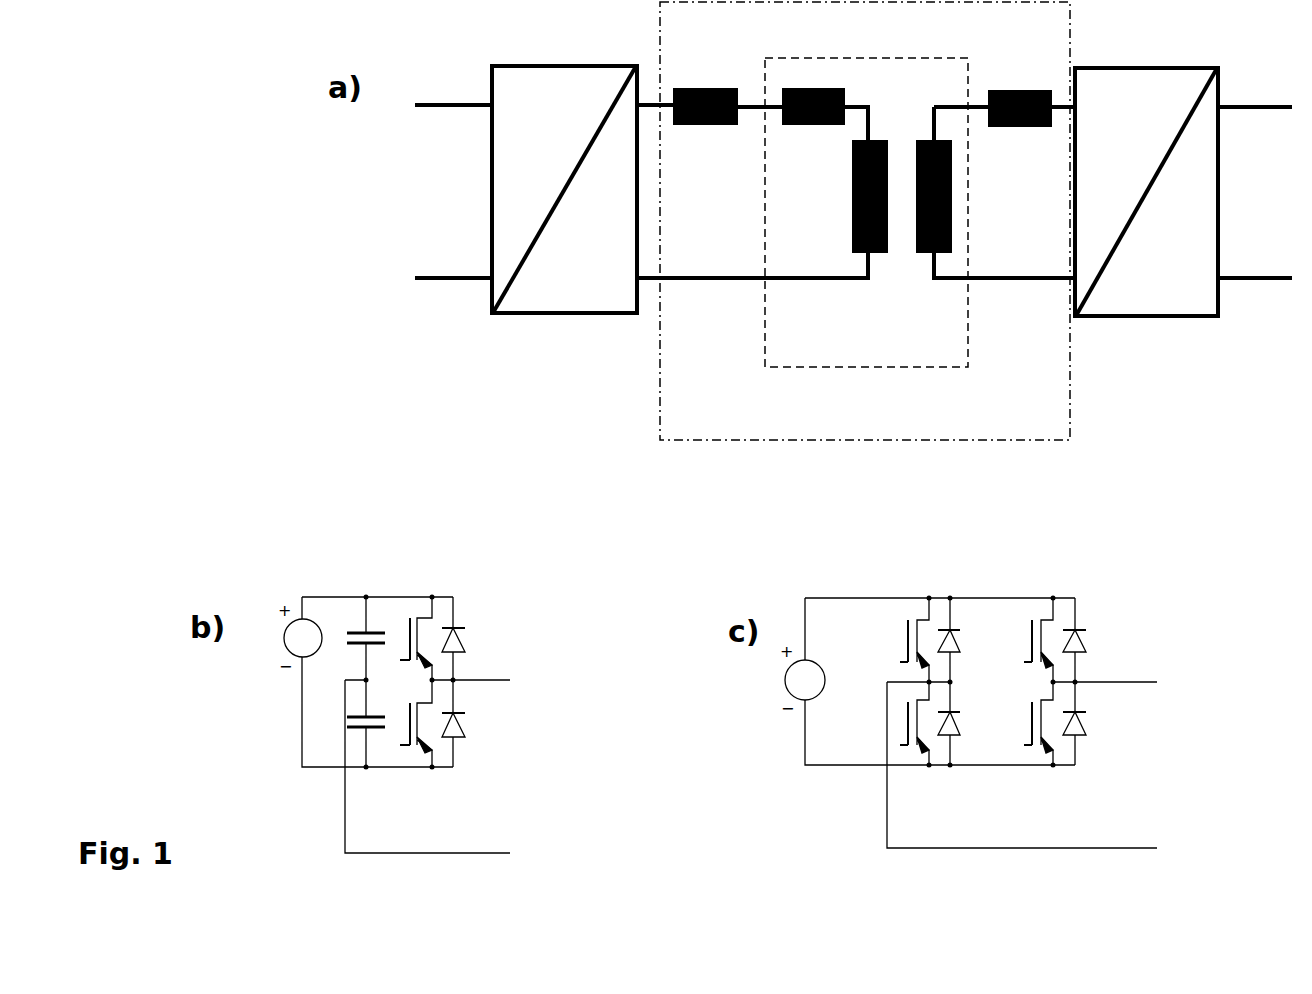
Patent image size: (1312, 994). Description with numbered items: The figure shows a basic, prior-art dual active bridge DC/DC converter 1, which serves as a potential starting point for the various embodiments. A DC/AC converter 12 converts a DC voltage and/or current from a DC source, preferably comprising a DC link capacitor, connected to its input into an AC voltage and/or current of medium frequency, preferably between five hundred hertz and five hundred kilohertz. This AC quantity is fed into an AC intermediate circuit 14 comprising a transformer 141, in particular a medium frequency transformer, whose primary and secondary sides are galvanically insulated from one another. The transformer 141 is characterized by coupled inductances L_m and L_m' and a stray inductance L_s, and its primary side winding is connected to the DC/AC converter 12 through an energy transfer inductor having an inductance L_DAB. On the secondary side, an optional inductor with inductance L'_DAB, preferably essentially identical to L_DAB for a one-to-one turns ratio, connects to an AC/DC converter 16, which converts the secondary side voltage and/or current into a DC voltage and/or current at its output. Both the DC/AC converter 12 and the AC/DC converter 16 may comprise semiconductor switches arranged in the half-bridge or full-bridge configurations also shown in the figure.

The dual active bridge DC/DC converter 1 is at (383, 325).
The DC/AC converter 12 is at (623, 306).
The AC intermediate circuit 14 is at (714, 424).
The transformer 141 is at (833, 350).
The AC/DC converter 16 is at (1200, 306).